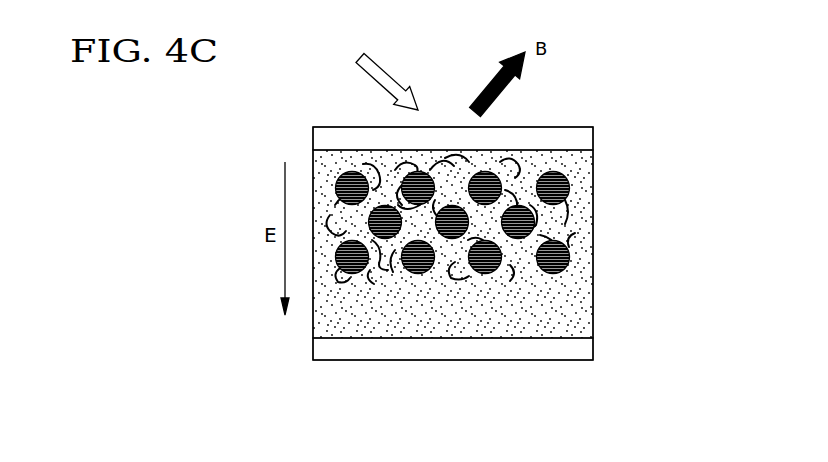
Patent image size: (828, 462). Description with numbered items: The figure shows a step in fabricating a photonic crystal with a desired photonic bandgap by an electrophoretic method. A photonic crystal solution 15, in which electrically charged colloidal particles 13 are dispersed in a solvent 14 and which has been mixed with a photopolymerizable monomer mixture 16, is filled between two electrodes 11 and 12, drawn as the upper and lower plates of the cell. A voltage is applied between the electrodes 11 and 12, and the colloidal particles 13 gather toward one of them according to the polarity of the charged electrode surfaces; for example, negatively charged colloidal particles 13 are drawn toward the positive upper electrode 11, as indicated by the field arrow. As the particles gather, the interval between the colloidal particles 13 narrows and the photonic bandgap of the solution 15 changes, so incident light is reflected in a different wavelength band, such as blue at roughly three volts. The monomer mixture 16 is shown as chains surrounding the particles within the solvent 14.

The upper electrode 11 is at (580, 140).
The electrode 12 is at (575, 352).
The colloidal particles 13 is at (570, 192).
The solvent 14 is at (578, 223).
The photonic crystal solution 15 is at (501, 245).
The photopolymerizable monomer mixture 16 is at (570, 235).